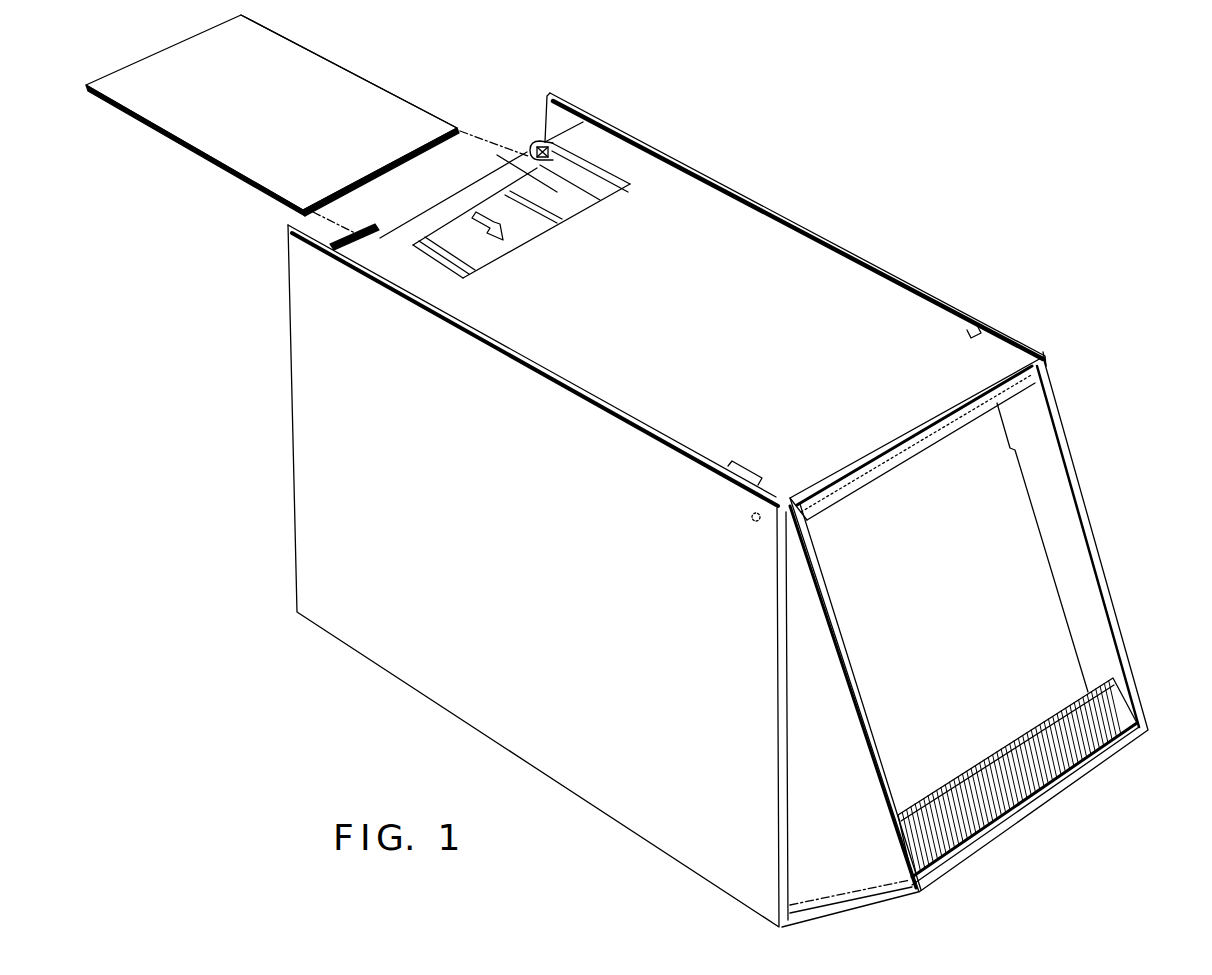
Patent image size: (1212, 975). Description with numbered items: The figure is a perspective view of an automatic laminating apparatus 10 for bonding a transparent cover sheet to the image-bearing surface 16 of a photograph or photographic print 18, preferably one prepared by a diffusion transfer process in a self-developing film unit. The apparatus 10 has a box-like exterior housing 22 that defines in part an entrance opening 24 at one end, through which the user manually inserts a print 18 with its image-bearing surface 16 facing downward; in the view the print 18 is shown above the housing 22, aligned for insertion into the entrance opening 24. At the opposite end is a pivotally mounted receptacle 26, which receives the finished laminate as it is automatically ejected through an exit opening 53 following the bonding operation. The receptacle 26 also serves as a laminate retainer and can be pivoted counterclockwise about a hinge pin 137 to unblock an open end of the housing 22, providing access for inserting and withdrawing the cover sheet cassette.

The automatic laminating apparatus 10 is at (950, 288).
The image-bearing surface 16 is at (233, 173).
The photograph or photographic print 18 is at (379, 88).
The exterior housing 22 is at (856, 242).
The entrance opening 24 is at (508, 208).
The pivotally mounted receptacle 26 is at (1132, 626).
The exit opening 53 is at (968, 440).
The hinge pin 137 is at (752, 520).